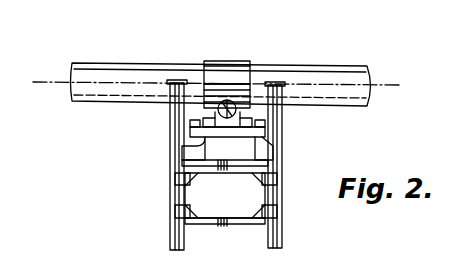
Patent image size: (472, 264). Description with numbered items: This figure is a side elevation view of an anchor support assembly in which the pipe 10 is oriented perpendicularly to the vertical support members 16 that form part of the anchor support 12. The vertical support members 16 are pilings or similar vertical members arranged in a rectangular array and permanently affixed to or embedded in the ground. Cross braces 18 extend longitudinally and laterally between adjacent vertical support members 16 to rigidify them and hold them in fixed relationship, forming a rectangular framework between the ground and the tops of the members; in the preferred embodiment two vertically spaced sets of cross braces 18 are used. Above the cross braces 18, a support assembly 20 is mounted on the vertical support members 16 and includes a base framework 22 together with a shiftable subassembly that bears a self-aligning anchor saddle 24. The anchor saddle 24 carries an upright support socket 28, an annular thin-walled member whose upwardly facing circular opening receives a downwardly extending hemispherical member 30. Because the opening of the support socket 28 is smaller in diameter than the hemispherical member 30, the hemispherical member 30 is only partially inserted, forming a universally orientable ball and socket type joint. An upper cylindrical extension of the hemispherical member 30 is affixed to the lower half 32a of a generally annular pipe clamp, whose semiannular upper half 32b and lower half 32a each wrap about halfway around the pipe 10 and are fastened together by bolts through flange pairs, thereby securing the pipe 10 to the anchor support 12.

The pipe 10 is at (337, 71).
The anchor support 12 is at (227, 165).
The vertical support members 16 is at (168, 221).
The cross braces 18 is at (243, 170).
The support assembly 20 is at (220, 138).
The base framework 22 is at (180, 163).
The anchor saddle 24 is at (209, 115).
The support socket 28 is at (247, 118).
The hemispherical member 30 is at (223, 107).
The lower half of pipe clamp 32a is at (202, 96).
The upper half of pipe clamp 32b is at (228, 62).